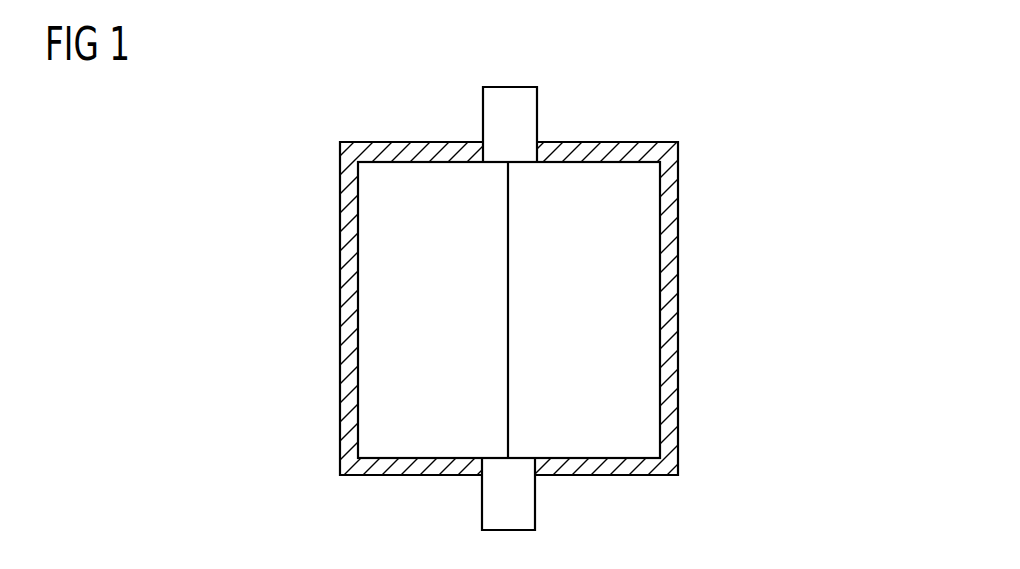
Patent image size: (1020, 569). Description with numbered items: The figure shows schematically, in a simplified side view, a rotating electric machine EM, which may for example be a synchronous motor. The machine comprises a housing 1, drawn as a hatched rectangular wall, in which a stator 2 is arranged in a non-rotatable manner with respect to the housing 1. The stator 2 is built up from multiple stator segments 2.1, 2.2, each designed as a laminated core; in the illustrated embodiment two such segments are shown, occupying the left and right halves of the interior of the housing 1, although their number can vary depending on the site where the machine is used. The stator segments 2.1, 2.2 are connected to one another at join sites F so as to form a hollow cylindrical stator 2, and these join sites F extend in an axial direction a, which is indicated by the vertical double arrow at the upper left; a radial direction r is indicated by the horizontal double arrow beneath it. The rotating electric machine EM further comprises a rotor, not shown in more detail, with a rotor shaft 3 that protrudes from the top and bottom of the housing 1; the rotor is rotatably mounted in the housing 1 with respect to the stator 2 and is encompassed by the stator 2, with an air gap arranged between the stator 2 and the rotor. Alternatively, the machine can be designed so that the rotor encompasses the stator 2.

The housing 1 is at (673, 300).
The stator 2 is at (377, 292).
The stator segment 2.1 is at (417, 432).
The stator segment 2.2 is at (600, 432).
The rotor shaft 3 is at (524, 114).
The join site F is at (512, 354).
The rotating electric machine EM is at (749, 149).
The axial direction a is at (270, 30).
The radial direction r is at (315, 145).